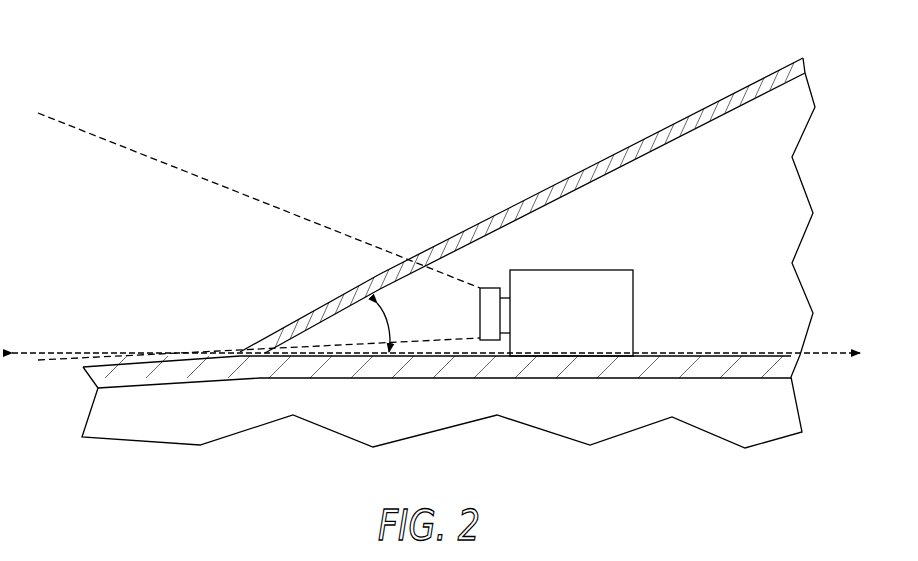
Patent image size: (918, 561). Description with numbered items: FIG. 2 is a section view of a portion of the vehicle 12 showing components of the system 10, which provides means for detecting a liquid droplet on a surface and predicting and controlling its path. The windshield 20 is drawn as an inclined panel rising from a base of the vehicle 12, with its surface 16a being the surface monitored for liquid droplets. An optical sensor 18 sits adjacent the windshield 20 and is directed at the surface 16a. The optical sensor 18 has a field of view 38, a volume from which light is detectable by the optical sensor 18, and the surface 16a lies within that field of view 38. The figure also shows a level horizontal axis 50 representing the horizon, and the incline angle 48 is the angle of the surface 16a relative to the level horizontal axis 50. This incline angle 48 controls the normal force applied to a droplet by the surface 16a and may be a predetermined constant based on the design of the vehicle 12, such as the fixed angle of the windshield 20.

The system 10 is at (306, 80).
The vehicle 12 is at (576, 108).
The windshield 20 is at (524, 186).
The surface 16a is at (325, 305).
The optical sensor 18 is at (600, 270).
The field of view 38 is at (138, 153).
The incline angle 48 is at (387, 327).
The level horizontal axis 50 is at (826, 359).